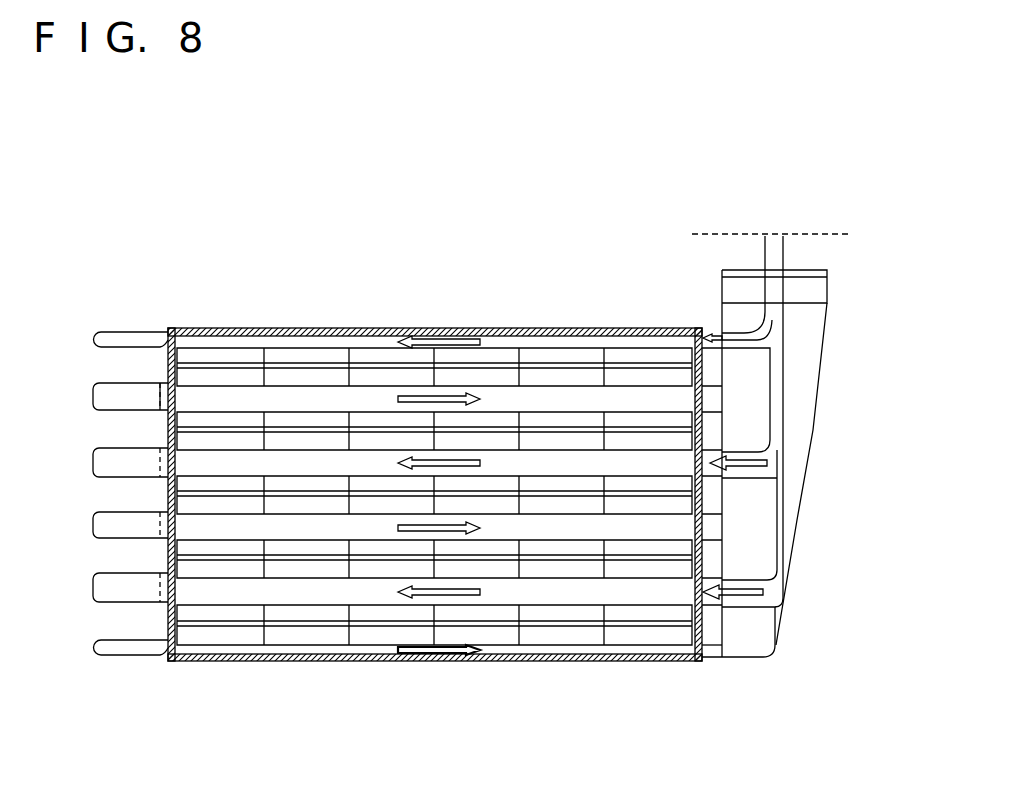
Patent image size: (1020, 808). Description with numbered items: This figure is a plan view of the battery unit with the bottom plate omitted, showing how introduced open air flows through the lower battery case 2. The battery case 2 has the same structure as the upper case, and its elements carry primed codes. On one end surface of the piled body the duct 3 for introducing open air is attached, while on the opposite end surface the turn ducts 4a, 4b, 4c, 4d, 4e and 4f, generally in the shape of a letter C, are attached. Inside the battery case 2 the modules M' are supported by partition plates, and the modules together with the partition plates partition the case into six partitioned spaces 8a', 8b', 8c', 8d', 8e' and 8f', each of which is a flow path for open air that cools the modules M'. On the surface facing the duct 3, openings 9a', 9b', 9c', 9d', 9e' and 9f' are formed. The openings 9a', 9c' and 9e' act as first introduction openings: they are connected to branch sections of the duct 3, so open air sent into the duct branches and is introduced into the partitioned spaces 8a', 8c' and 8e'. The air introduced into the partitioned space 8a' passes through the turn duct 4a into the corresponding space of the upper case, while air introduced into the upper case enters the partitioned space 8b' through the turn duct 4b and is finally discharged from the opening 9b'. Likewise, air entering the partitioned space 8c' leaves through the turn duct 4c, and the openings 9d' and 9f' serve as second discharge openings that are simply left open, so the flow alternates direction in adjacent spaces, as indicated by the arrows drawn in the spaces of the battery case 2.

The battery case 2 is at (452, 329).
The duct for introducing open air 3 is at (811, 483).
The turn duct 4a is at (125, 342).
The turn duct 4b is at (128, 398).
The turn duct 4c is at (128, 462).
The turn duct 4d is at (128, 527).
The turn duct 4e is at (128, 590).
The turn duct 4f is at (125, 648).
The partitioned space 8a' is at (489, 303).
The partitioned space 8b' is at (499, 347).
The partitioned space 8c' is at (377, 382).
The partitioned space 8d' is at (535, 612).
The partitioned space 8e' is at (502, 646).
The partitioned space 8f' is at (382, 678).
The opening 9a' is at (693, 314).
The opening 9b' is at (732, 387).
The opening 9c' is at (734, 448).
The opening 9d' is at (735, 525).
The opening 9e' is at (732, 575).
The opening 9f' is at (735, 679).
The module M' is at (435, 485).